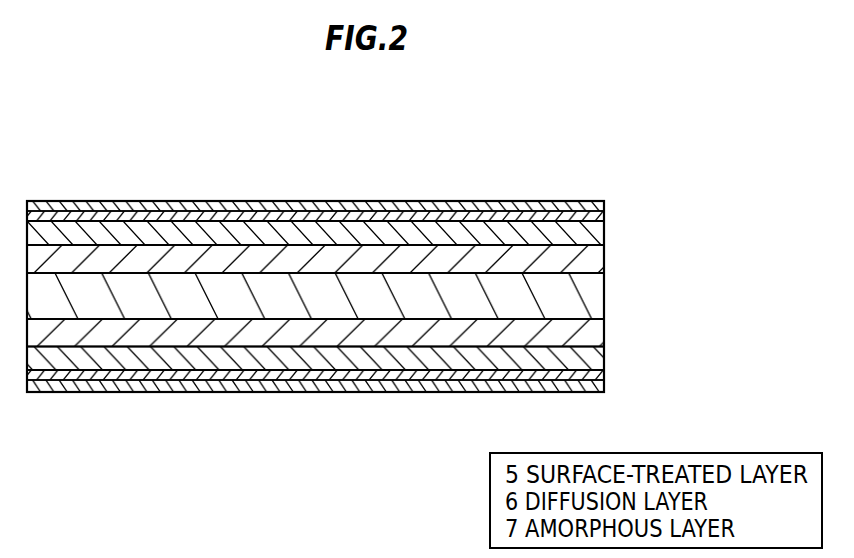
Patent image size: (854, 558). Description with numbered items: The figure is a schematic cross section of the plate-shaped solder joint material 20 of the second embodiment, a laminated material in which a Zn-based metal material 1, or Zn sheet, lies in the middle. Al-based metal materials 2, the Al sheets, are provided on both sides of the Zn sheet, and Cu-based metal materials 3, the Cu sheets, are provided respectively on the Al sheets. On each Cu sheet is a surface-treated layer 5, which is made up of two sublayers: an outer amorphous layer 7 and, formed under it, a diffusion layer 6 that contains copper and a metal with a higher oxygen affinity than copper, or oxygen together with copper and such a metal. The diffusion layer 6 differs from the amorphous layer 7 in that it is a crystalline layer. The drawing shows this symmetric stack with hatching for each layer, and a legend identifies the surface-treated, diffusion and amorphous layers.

The Zn-based metal material 1 is at (595, 302).
The Al-based metal material 2 is at (597, 262).
The Cu-based metal material 3 is at (597, 238).
The surface-treated layer 5 is at (660, 135).
The diffusion layer 6 is at (597, 217).
The amorphous layer 7 is at (603, 201).
The plate-shaped solder joint material 20 is at (541, 112).